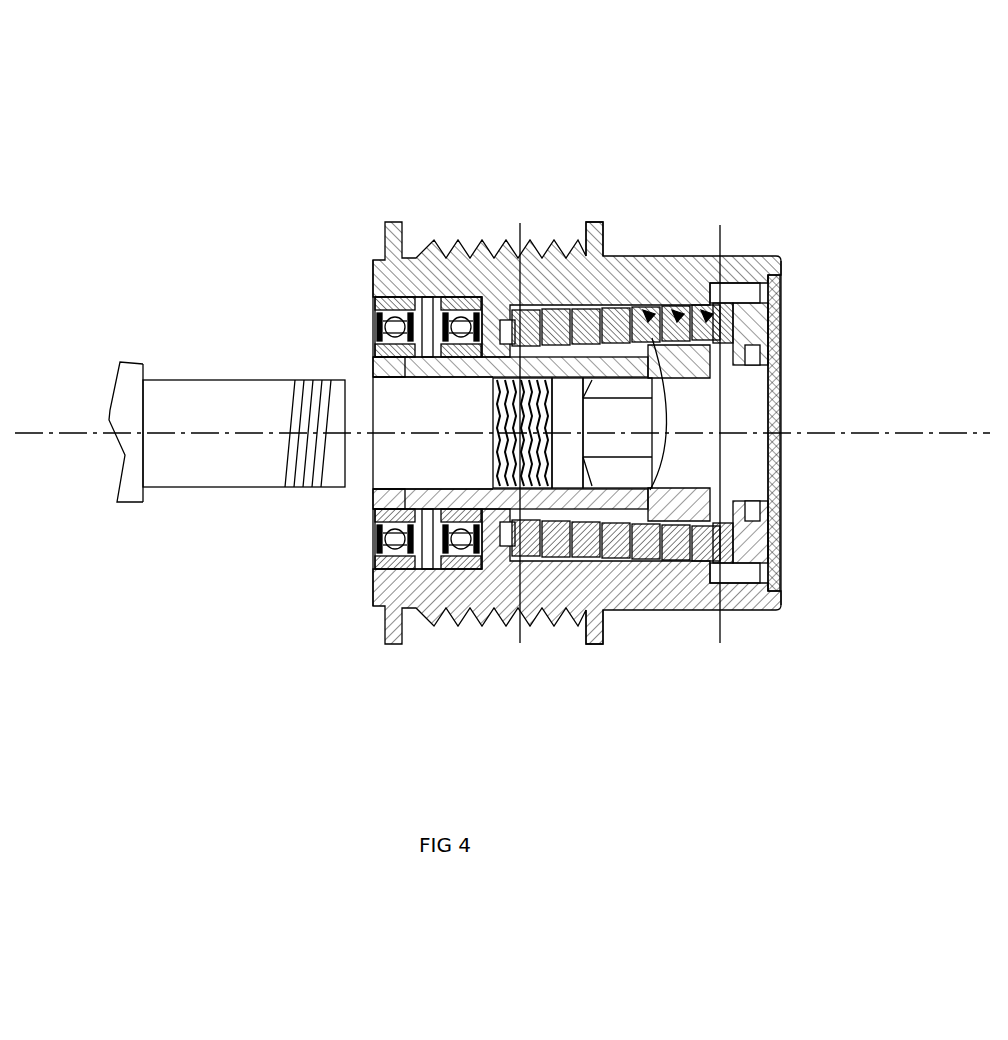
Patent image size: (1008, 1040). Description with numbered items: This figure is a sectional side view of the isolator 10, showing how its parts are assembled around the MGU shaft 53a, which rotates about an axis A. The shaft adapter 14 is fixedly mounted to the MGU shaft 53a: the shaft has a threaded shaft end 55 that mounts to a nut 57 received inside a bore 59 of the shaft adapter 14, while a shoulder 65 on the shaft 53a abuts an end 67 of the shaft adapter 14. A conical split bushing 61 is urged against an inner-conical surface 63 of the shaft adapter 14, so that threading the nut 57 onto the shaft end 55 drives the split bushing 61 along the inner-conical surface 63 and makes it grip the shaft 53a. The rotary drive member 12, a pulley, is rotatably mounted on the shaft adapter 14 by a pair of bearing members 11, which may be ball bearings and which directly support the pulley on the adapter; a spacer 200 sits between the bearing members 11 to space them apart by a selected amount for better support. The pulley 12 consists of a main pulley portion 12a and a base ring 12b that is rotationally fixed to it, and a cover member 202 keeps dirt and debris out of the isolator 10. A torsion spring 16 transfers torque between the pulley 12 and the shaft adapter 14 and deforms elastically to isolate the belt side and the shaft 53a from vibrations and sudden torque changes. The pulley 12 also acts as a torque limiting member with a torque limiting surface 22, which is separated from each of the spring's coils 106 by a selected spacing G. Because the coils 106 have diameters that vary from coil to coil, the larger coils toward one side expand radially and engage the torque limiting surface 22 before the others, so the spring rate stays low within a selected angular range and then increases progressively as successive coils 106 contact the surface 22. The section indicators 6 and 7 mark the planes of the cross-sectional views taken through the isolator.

The isolator 10 is at (348, 80).
The rotary drive member 12 is at (768, 148).
The main pulley portion 12a is at (593, 222).
The base ring 12b is at (748, 290).
The cover member 202 is at (782, 402).
The torsion spring 16 is at (735, 548).
The conical split bushing 61 is at (470, 370).
The bearing members 11 is at (403, 560).
The spacer 200 is at (427, 298).
The inner-conical surface 63 is at (430, 350).
The end 67 is at (373, 363).
The shaft adapter 14 is at (397, 500).
The torque limiting surface 22 is at (555, 318).
The coils 106 is at (568, 547).
The spacing G is at (709, 318).
The MGU shaft 53a is at (229, 379).
The shoulder 65 is at (143, 373).
The shaft end 55 is at (320, 487).
The nut 57 is at (638, 492).
The bore 59 is at (655, 480).
The axis A is at (55, 432).
The section line 7 is at (520, 223).
The section line 6 is at (720, 225).